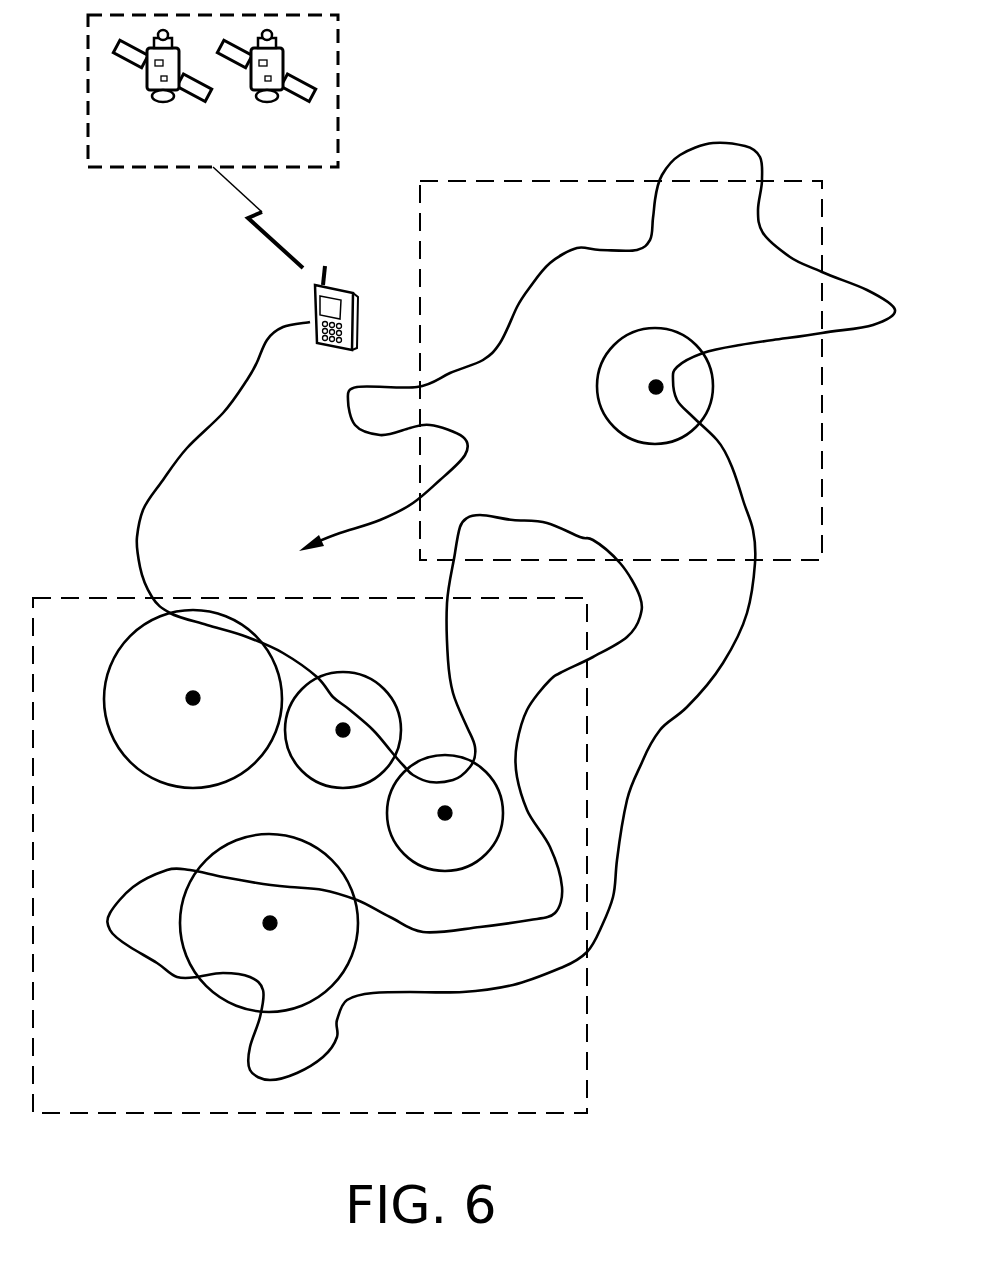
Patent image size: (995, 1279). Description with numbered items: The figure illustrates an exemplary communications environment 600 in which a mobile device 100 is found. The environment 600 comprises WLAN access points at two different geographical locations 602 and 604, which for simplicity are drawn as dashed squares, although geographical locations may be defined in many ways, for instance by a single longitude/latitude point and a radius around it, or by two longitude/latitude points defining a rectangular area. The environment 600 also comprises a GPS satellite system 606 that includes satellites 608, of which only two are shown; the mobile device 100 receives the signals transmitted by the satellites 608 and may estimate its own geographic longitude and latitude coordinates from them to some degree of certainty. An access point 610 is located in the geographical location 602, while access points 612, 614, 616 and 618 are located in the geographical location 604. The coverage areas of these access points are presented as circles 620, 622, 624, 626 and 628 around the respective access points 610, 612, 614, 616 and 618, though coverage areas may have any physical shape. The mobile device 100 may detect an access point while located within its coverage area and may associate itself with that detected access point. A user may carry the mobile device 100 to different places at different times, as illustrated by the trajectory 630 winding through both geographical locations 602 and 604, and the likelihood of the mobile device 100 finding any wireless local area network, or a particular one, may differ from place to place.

The mobile device 100 is at (357, 313).
The communications environment 600 is at (626, 52).
The geographical location 602 is at (483, 181).
The geographical location 604 is at (48, 598).
The GPS satellite system 606 is at (213, 91).
The satellite 608 is at (147, 78).
The access point 610 is at (650, 383).
The access point 612 is at (185, 697).
The access point 614 is at (340, 726).
The access point 616 is at (440, 810).
The access point 618 is at (262, 920).
The location uncertainty circle 620 is at (630, 443).
The location uncertainty circle 622 is at (150, 780).
The location uncertainty circle 624 is at (320, 787).
The location uncertainty circle 626 is at (492, 853).
The location uncertainty circle 628 is at (225, 1003).
The trajectory 630 is at (187, 448).